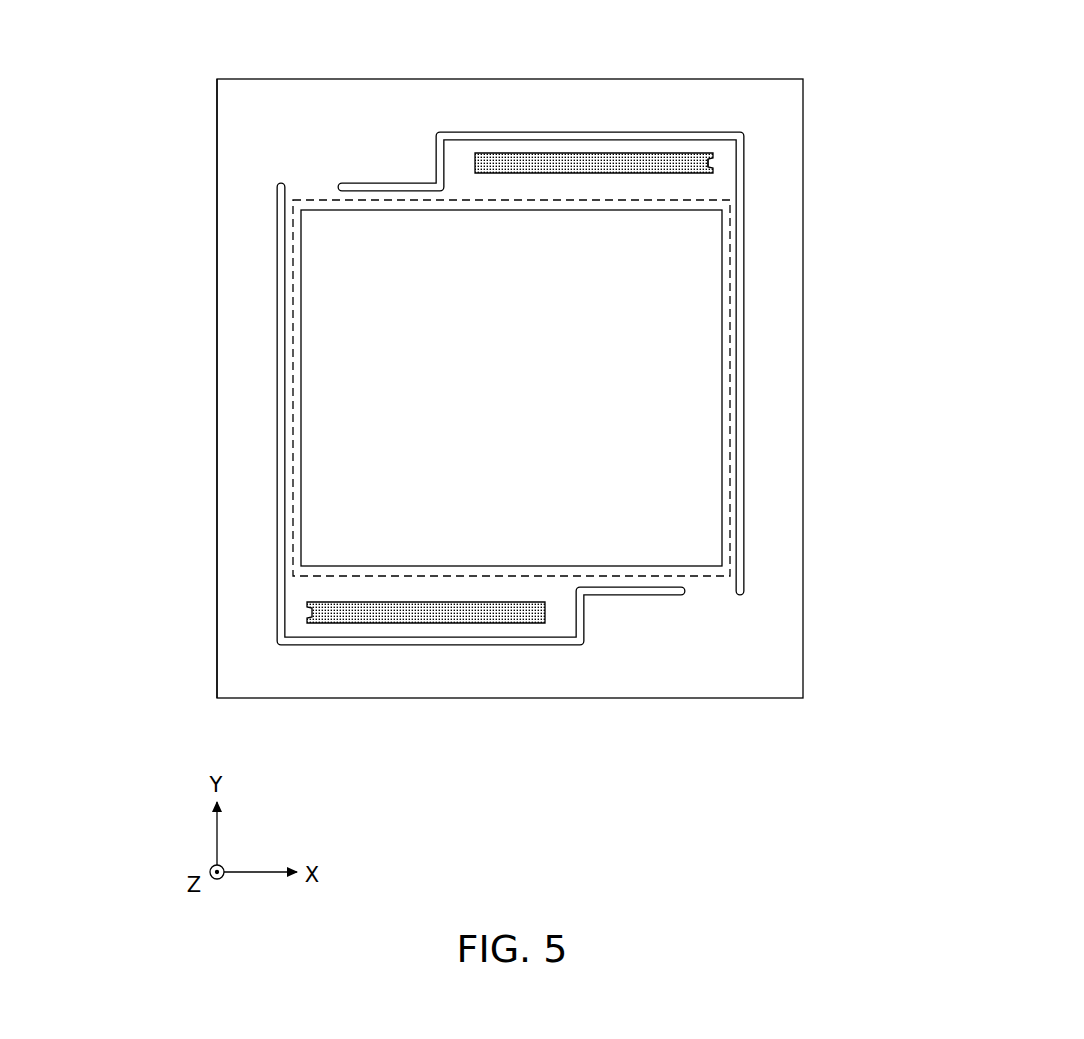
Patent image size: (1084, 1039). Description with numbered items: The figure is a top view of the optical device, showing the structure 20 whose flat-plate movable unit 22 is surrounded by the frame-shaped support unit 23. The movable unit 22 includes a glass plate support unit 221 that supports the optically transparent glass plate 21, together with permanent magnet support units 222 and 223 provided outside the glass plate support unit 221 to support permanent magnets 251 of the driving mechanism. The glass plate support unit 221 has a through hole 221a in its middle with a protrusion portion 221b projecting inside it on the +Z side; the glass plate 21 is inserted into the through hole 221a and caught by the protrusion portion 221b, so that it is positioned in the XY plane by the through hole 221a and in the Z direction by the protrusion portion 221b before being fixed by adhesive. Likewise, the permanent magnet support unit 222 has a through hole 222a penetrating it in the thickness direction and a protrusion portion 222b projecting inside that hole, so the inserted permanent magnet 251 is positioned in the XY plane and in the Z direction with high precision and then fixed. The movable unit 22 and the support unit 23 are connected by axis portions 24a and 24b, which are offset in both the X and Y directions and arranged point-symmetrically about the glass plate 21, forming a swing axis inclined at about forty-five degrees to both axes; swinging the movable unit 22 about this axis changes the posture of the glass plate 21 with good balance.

The structure 20 is at (217, 155).
The glass plate 21 is at (336, 297).
The movable unit 22 is at (620, 595).
The glass plate support unit 221 is at (285, 405).
The through hole 221a is at (293, 470).
The protrusion portion 221b is at (301, 504).
The permanent magnet support unit 222 is at (645, 92).
The through hole 222a is at (576, 160).
The protrusion portion 222b is at (713, 163).
The permanent magnet support unit 223 is at (458, 630).
The support unit 23 is at (775, 386).
The axis portion 24a is at (317, 186).
The axis portion 24b is at (707, 598).
The permanent magnet 251 is at (666, 152).